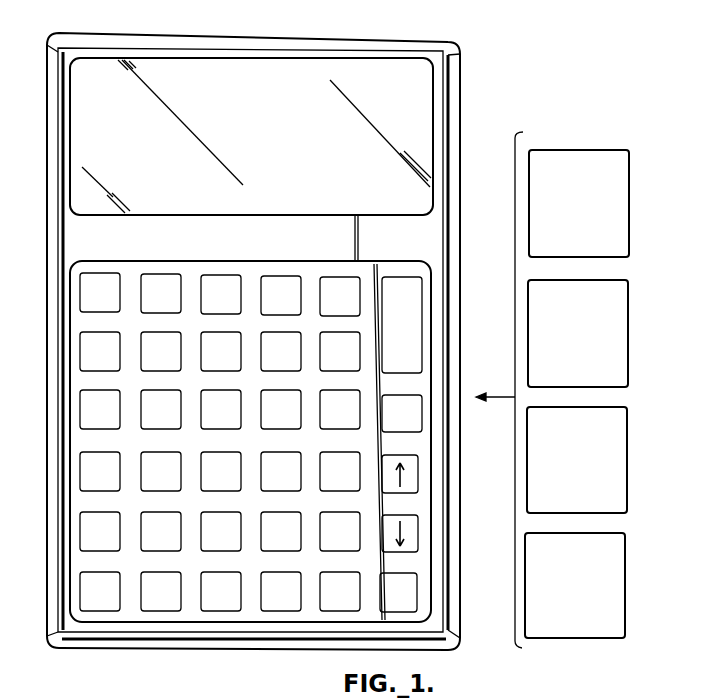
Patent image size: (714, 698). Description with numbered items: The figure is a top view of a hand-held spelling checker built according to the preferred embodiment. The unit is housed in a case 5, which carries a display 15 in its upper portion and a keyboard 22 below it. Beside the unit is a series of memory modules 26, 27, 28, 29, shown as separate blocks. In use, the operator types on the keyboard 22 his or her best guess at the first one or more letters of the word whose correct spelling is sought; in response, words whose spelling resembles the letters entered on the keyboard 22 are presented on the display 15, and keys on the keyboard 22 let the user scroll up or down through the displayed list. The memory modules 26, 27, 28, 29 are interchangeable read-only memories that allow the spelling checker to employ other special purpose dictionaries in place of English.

The case 5 is at (252, 33).
The display 15 is at (390, 78).
The keyboard 22 is at (85, 612).
The memory module 26 is at (632, 173).
The memory module 27 is at (631, 299).
The memory module 28 is at (629, 425).
The memory module 29 is at (627, 555).